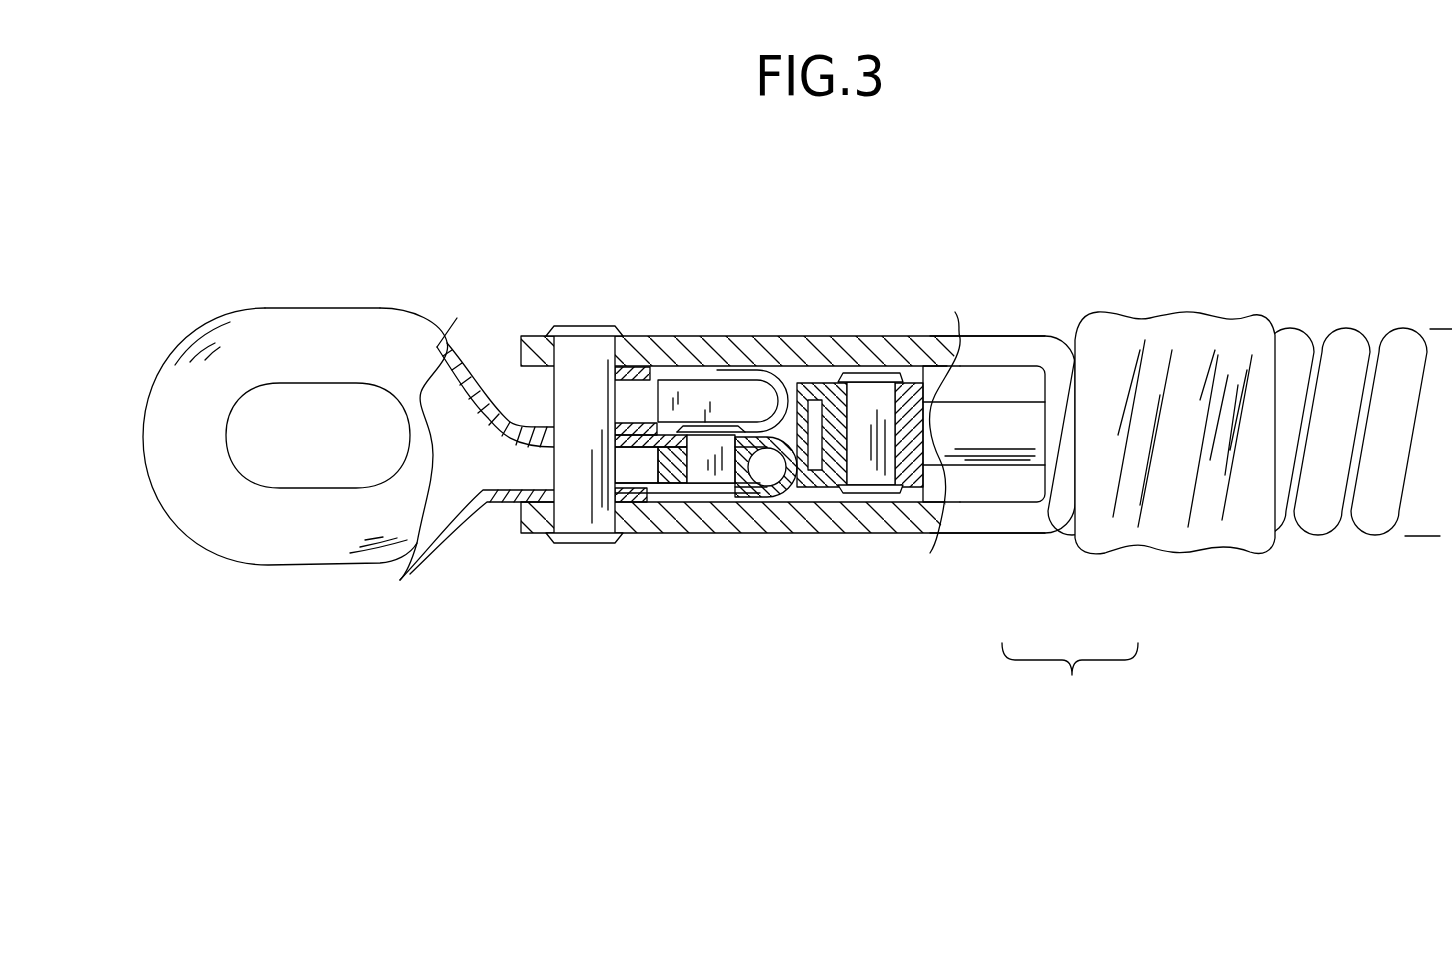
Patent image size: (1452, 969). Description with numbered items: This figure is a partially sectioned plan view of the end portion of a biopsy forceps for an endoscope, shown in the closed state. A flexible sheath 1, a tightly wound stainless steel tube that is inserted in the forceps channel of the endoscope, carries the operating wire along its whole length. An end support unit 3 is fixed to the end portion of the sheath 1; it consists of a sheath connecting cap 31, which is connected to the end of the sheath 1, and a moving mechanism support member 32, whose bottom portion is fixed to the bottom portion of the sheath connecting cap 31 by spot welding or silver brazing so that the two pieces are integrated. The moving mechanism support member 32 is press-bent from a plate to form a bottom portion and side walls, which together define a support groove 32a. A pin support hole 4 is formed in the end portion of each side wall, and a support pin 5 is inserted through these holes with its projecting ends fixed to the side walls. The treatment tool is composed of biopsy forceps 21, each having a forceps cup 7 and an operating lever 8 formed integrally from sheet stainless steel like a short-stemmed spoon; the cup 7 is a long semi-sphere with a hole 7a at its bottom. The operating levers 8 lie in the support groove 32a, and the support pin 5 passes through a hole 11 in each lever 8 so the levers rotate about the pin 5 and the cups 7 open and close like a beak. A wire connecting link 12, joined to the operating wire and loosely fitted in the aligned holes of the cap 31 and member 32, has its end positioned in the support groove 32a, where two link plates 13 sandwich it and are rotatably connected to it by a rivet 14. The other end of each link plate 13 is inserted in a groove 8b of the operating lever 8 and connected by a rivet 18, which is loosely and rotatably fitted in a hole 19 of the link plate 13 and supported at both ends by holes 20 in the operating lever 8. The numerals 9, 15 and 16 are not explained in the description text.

The flexible sheath 1 is at (1323, 523).
The end support unit 3 is at (1070, 679).
The pin support hole 4 is at (516, 426).
The support pin 5 is at (577, 337).
The forceps cup 7 is at (273, 325).
The hole 7a is at (278, 463).
The operating lever 8 is at (718, 410).
The groove 8b is at (631, 460).
The plate neck portion 9 is at (517, 503).
The hole 11 is at (566, 543).
The wire connecting link 12 is at (1000, 407).
The link plate 13 is at (810, 405).
The rivet 14 is at (857, 385).
The collar 15 is at (890, 395).
The pin head 16 is at (865, 497).
The rivet 18 is at (700, 483).
The hole 19 is at (733, 482).
The hole 20 is at (712, 450).
The biopsy forceps 21 is at (381, 308).
The sheath connecting cap 31 is at (1153, 557).
The moving mechanism support member 32 is at (1002, 533).
The support groove 32a is at (925, 450).